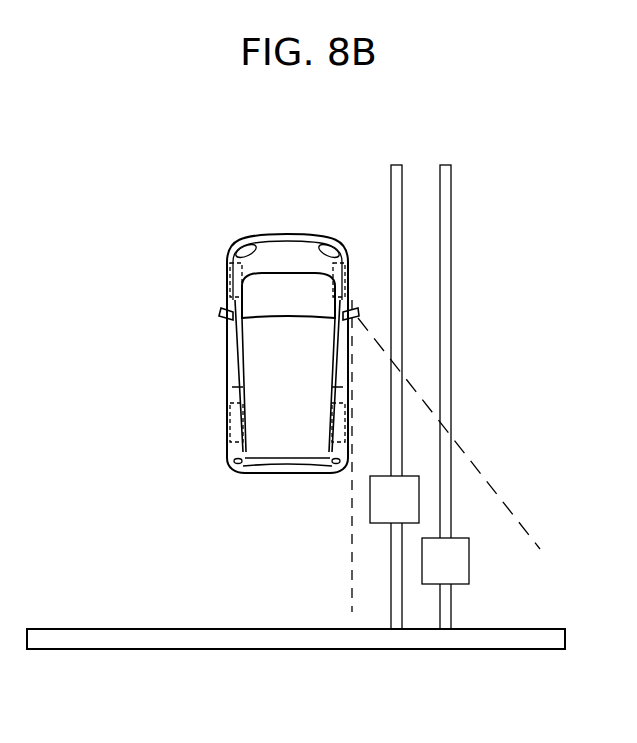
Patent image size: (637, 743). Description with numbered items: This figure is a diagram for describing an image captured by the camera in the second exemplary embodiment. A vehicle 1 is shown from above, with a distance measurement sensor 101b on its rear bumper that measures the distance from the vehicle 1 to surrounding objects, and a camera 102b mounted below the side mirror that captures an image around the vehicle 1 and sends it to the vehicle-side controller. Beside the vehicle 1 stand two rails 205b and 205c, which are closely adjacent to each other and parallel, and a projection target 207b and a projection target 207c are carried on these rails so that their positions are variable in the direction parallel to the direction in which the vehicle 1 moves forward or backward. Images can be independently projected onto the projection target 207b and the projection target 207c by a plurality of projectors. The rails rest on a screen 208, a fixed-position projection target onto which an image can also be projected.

The vehicle 1 is at (282, 256).
The distance measurement sensor 101b is at (327, 474).
The camera 102b is at (355, 300).
The rail 205b is at (398, 165).
The rail 205c is at (447, 165).
The projection target 207b is at (370, 500).
The projection target 207c is at (470, 565).
The screen 208 is at (467, 650).